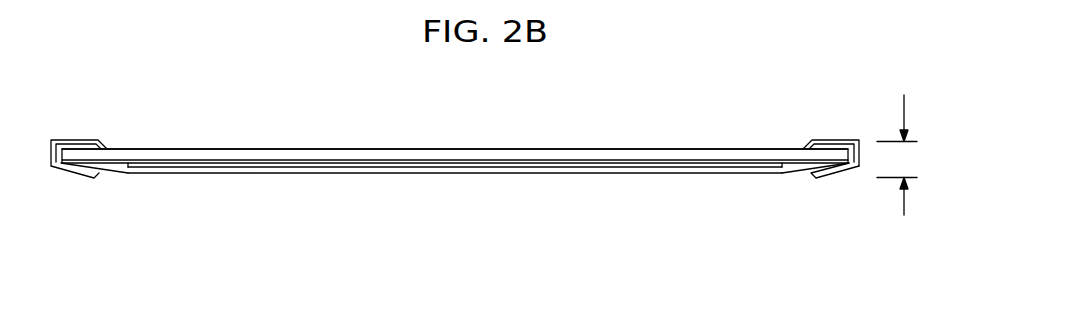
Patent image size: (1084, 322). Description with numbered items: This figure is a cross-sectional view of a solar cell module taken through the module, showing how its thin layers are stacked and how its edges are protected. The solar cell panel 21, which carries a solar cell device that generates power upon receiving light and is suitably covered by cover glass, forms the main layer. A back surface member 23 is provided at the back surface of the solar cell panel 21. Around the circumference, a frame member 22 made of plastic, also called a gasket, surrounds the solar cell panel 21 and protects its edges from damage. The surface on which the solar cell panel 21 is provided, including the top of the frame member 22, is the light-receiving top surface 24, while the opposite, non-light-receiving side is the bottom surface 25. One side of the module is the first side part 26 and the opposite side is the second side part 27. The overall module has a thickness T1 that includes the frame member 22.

The solar cell panel 21 is at (620, 155).
The frame member 22 is at (835, 182).
The back surface member 23 is at (678, 166).
The top surface 24 is at (263, 148).
The bottom surface 25 is at (350, 173).
The first side part 26 is at (830, 139).
The second side part 27 is at (77, 140).
The thickness T1 is at (914, 155).